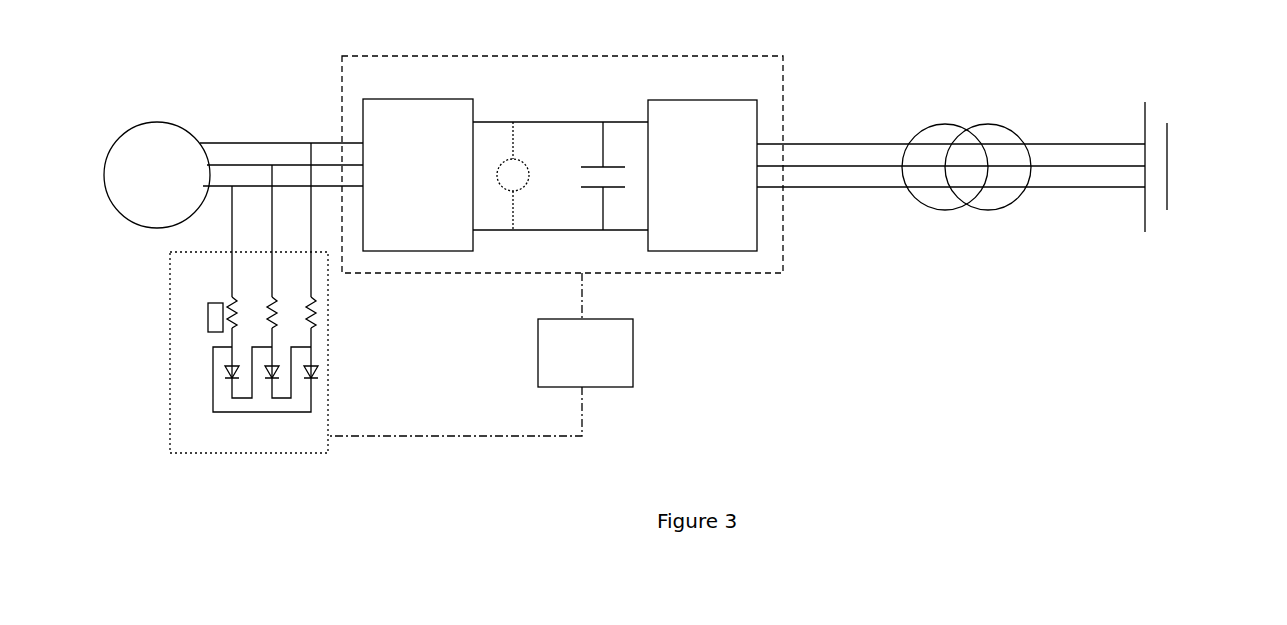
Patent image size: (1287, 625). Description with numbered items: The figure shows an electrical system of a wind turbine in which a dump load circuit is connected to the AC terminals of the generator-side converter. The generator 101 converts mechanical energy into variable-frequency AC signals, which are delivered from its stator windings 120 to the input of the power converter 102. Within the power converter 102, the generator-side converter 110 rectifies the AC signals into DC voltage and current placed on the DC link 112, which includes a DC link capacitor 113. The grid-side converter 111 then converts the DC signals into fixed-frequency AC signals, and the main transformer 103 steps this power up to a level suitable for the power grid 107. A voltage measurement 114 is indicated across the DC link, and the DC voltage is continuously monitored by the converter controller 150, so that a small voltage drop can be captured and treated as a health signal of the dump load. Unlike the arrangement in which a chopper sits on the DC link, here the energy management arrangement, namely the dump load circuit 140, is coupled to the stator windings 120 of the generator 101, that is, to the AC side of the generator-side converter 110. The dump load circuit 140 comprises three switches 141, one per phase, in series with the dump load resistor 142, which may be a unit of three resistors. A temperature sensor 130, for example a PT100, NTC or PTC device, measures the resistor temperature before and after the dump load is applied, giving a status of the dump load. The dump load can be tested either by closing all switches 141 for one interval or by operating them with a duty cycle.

The generator 101 is at (165, 121).
The stator windings 120 is at (253, 142).
The power converter 102 is at (787, 88).
The generator-side converter 110 is at (430, 146).
The grid-side converter 111 is at (715, 147).
The DC link 112 is at (605, 110).
The DC link capacitor 113 is at (600, 194).
The voltage sensor 114 is at (523, 160).
The main transformer 103 is at (997, 122).
The power grid 107 is at (1168, 145).
The temperature sensor 130 is at (200, 317).
The dump load circuit 140 is at (327, 342).
The switches 141 is at (317, 383).
The dump load resistor 142 is at (313, 318).
The converter controller 150 is at (633, 368).